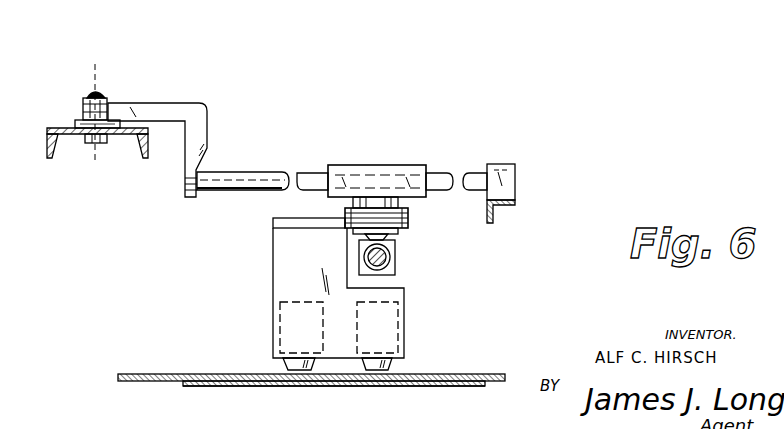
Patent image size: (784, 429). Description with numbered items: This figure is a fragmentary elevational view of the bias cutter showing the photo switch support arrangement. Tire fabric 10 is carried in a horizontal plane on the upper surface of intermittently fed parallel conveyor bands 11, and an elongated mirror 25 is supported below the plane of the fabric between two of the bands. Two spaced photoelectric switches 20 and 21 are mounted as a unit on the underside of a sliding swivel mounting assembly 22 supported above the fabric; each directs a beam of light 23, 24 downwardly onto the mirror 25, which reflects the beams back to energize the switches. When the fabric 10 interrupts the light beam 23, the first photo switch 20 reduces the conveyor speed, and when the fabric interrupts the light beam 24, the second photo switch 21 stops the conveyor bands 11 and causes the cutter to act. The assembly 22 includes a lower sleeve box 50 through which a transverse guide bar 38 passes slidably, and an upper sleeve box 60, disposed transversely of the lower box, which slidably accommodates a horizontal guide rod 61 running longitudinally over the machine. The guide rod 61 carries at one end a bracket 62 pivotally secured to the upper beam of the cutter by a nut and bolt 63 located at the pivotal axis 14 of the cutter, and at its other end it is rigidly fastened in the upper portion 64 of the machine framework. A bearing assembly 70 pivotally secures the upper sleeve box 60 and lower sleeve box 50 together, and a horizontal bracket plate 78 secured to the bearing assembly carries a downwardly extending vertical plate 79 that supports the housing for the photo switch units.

The tire fabric 10 is at (150, 374).
The conveyor bands 11 is at (155, 387).
The pivot point 14 is at (95, 80).
The photoelectric switch 20 is at (280, 310).
The photoelectric switch 21 is at (405, 336).
The sliding swivel mounting assembly 22 is at (402, 158).
The beam of light 23 is at (300, 372).
The beam of light 24 is at (382, 373).
The elongated mirror 25 is at (386, 387).
The transverse guide bar 38 is at (385, 262).
The sleeve box 50 is at (394, 253).
The upper sleeve box 60 is at (352, 176).
The horizontal guide rod 61 is at (250, 178).
The bracket 62 is at (193, 112).
The nut and bolt 63 is at (108, 100).
The upper portion of the machine framework 64 is at (493, 208).
The bearing assembly 70 is at (408, 219).
The horizontal bracket plate 78 is at (285, 222).
The vertical plate 79 is at (280, 248).